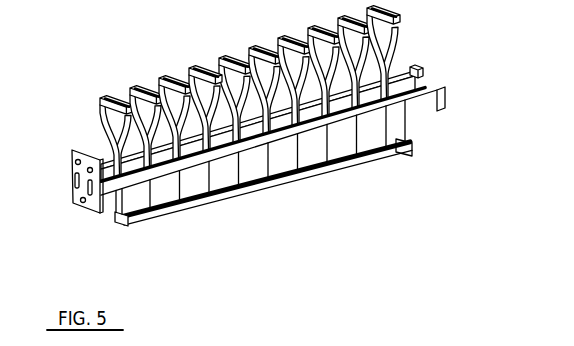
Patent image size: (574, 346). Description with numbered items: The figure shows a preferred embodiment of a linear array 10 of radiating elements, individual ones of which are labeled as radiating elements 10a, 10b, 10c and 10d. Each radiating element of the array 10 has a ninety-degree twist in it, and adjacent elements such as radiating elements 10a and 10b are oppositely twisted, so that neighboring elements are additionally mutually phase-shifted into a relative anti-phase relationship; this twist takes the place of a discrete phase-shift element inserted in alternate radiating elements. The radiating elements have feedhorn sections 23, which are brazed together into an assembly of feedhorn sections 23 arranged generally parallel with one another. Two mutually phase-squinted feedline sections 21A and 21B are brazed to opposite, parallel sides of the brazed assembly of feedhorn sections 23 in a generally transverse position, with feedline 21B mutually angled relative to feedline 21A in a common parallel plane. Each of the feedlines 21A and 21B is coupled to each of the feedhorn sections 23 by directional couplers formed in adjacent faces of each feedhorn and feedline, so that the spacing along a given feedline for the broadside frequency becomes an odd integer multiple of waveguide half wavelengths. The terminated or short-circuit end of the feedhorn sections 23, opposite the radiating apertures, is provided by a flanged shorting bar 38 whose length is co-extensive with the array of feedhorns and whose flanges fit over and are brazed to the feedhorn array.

The linear array of radiating elements 10 is at (244, 144).
The radiating element 10a is at (112, 98).
The radiating element 10b is at (151, 88).
The radiating element 10c is at (176, 79).
The radiating element 10d is at (207, 68).
The feedline section 21A is at (417, 67).
The feedline section 21B is at (421, 101).
The feedhorn sections 23 is at (166, 197).
The flanged shorting bar 38 is at (133, 210).